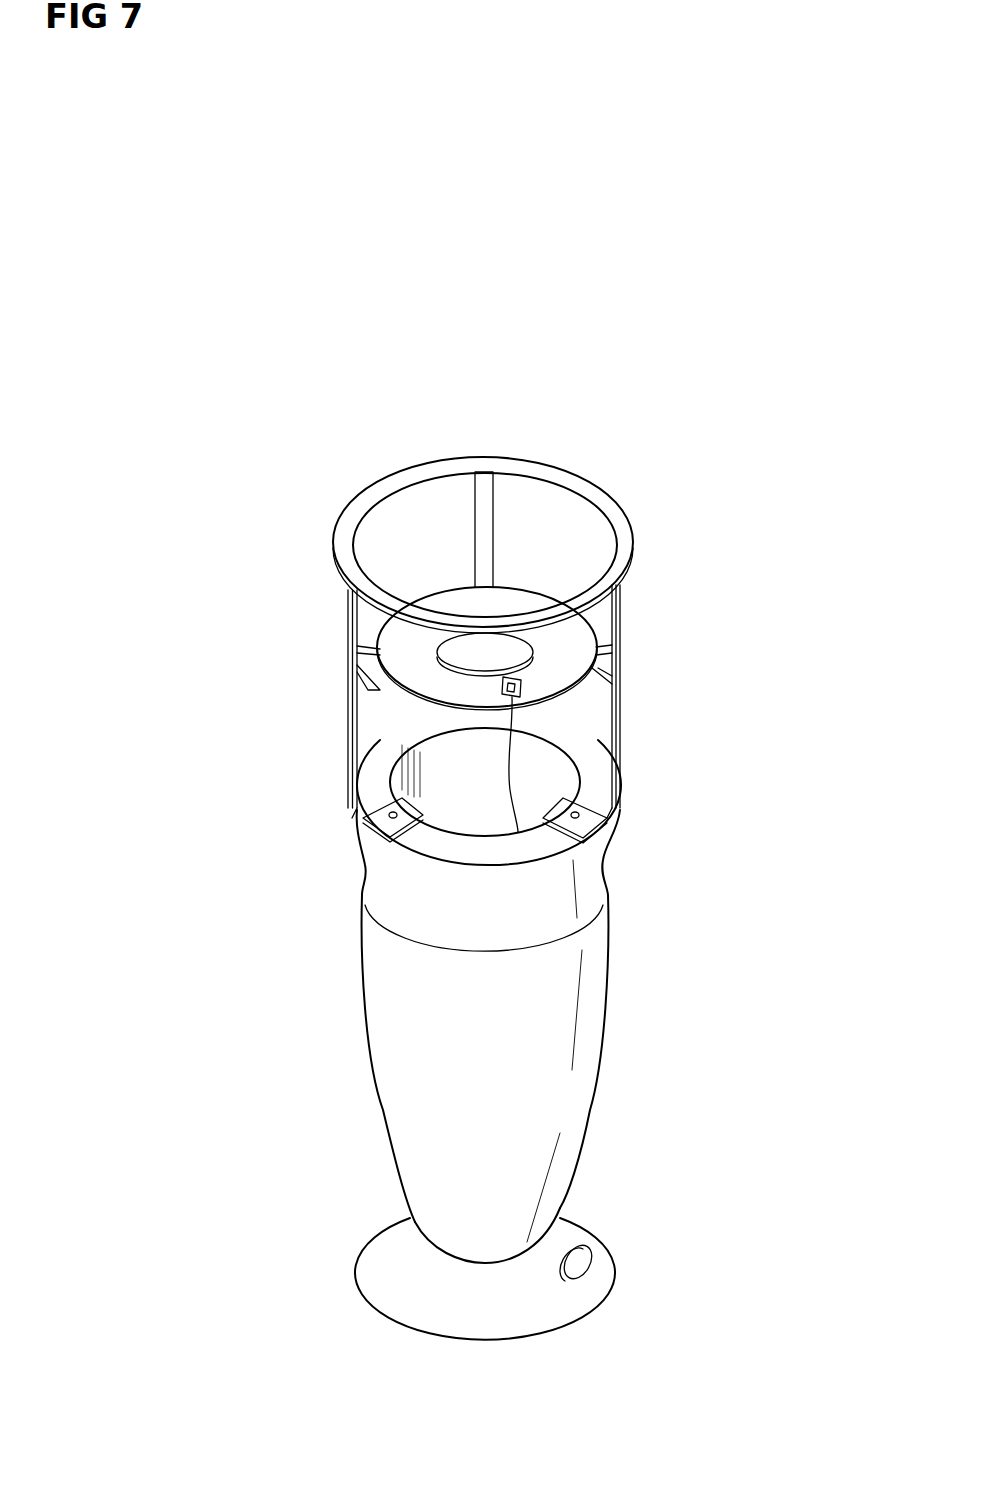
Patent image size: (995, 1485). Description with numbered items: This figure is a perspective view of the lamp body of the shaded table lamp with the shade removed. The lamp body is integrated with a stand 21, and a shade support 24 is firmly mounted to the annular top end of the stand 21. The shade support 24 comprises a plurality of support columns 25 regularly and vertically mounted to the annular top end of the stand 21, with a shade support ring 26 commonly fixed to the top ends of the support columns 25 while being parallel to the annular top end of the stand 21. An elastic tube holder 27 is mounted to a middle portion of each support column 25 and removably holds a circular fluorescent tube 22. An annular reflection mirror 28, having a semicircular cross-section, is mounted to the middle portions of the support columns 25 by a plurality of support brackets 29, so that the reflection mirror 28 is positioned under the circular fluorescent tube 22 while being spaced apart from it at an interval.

The stand 21 is at (570, 1098).
The circular fluorescent tube 22 is at (398, 706).
The shade support 24 is at (597, 800).
The support columns 25 is at (487, 527).
The shade support ring 26 is at (622, 538).
The tube holder 27 is at (358, 667).
The annular reflection mirror 28 is at (362, 648).
The support brackets 29 is at (605, 677).